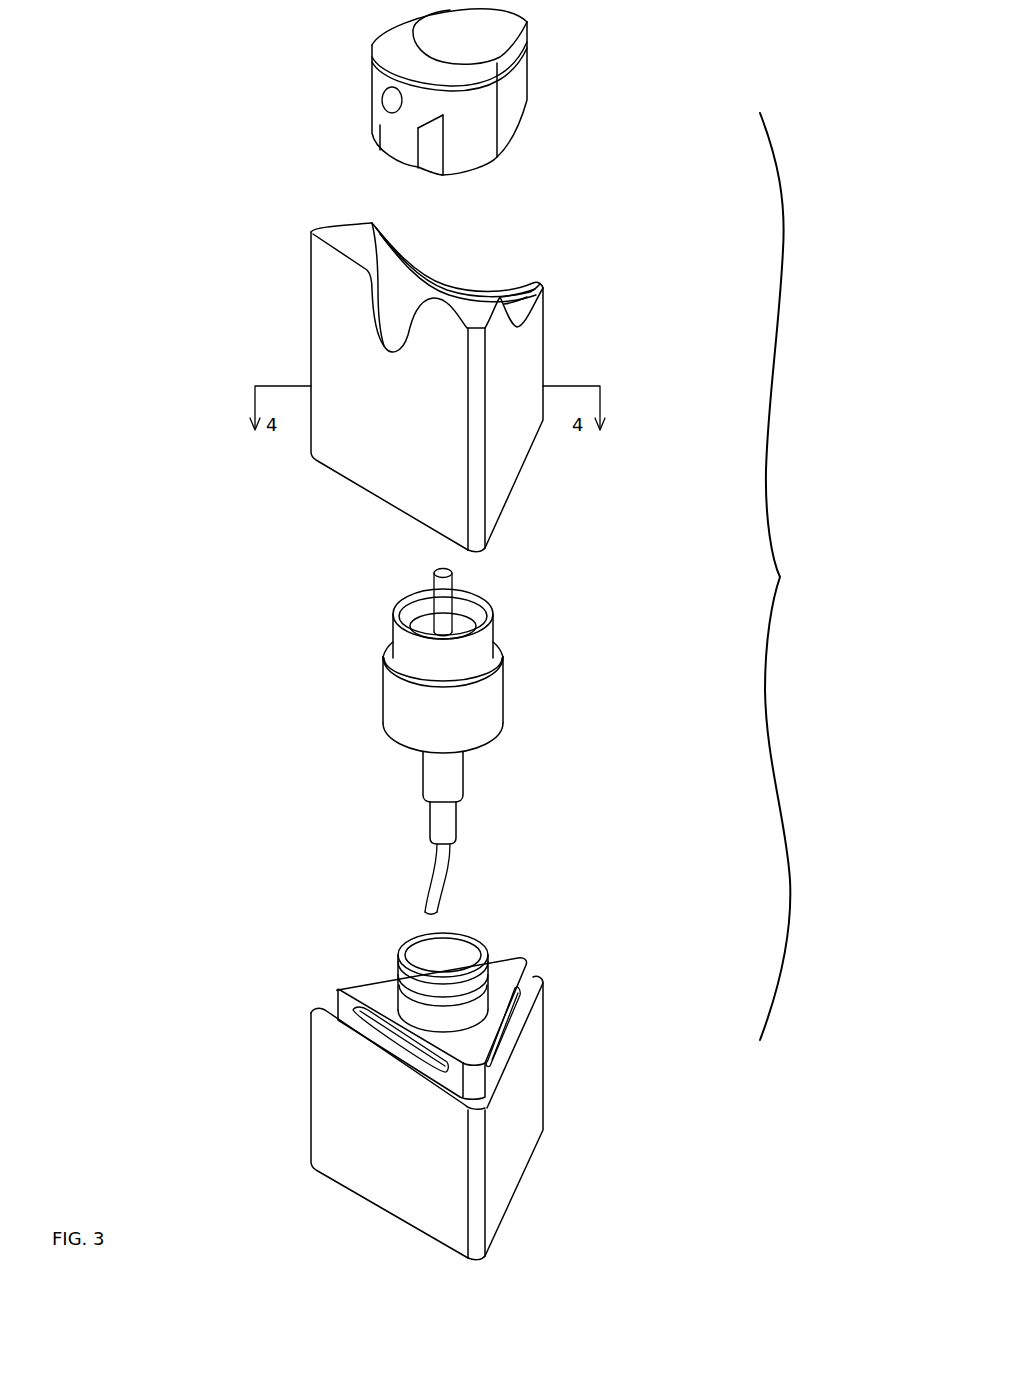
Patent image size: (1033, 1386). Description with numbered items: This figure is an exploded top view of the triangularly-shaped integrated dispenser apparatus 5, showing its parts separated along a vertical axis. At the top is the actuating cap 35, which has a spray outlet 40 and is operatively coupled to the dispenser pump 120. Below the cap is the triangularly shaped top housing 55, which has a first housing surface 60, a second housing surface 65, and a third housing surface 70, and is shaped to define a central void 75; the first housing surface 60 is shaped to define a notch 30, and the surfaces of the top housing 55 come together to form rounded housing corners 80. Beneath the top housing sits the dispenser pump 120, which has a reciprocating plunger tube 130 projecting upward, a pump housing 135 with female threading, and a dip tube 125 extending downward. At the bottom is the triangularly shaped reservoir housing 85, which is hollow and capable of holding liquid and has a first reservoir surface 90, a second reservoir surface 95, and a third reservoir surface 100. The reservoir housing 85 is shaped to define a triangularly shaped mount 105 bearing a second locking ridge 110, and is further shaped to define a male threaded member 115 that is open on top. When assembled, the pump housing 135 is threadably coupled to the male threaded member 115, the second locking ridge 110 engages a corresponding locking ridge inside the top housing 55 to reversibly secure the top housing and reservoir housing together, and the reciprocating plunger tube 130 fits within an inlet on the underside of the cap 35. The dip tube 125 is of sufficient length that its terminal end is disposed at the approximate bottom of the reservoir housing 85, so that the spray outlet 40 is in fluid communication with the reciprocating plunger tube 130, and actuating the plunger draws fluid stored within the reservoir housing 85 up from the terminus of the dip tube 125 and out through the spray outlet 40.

The triangularly-shaped integrated dispenser apparatus 5 is at (185, 797).
The notch 30 is at (423, 378).
The actuating cap 35 is at (487, 63).
The spray outlet 40 is at (392, 100).
The top housing 55 is at (275, 457).
The first housing surface 60 is at (352, 378).
The second housing surface 65 is at (520, 376).
The third housing surface 70 is at (347, 224).
The central void 75 is at (395, 290).
The rounded housing corners 80 is at (478, 503).
The reservoir housing 85 is at (413, 1031).
The first reservoir surface 90 is at (337, 1077).
The second reservoir surface 95 is at (517, 1097).
The third reservoir surface 100 is at (526, 965).
The triangularly shaped mount 105 is at (372, 992).
The second locking ridge 110 is at (340, 1012).
The male threaded member 115 is at (488, 957).
The dispenser pump 120 is at (442, 736).
The dip tube 125 is at (432, 887).
The reciprocating plunger tube 130 is at (442, 572).
The pump housing 135 is at (397, 698).